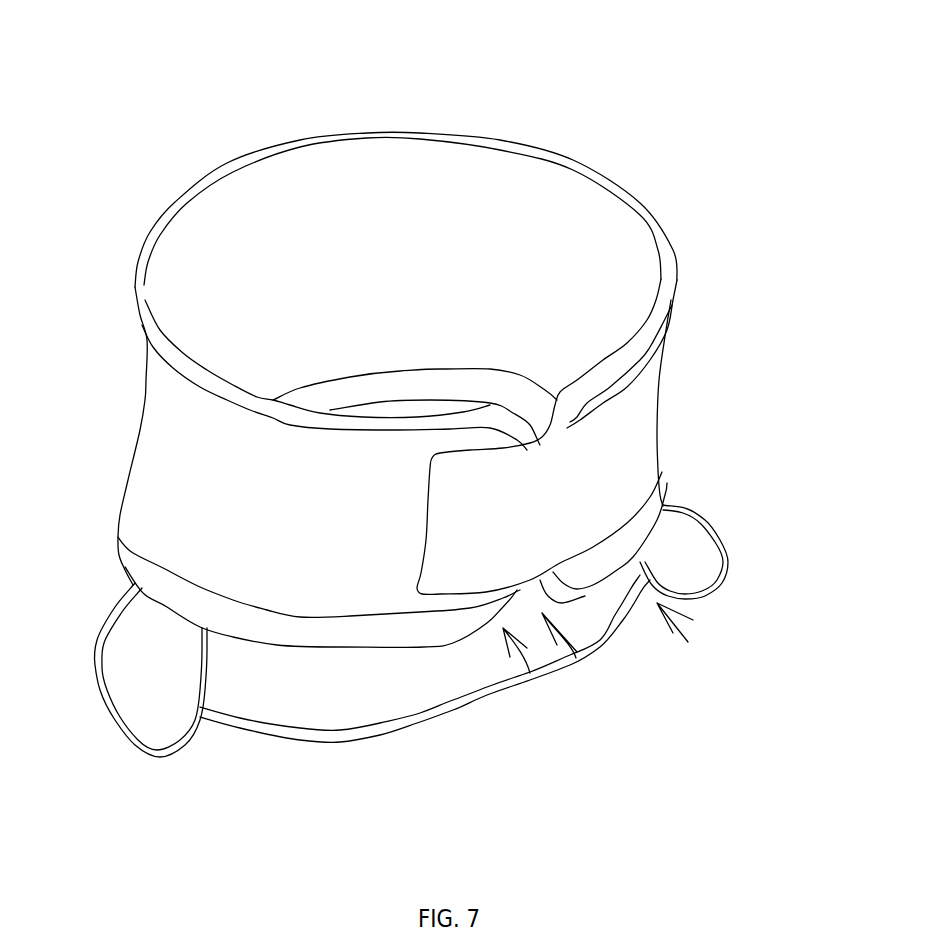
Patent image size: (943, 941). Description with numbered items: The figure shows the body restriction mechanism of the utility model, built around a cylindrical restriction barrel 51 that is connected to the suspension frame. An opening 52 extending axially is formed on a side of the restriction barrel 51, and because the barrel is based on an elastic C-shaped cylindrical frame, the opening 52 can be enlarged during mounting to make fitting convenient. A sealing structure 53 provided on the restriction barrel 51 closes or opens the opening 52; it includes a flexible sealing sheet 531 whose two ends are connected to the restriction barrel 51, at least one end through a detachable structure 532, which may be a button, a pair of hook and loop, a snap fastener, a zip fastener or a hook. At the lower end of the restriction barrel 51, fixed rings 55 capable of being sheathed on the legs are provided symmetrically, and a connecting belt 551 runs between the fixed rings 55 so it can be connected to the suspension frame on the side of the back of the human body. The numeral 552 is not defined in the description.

The restriction barrel 51 is at (445, 182).
The collar body 552 is at (218, 457).
The flexible sealing sheet 531 is at (635, 443).
The detachable structure 532 is at (688, 642).
The connecting belt 551 is at (432, 712).
The fixed rings 55 is at (190, 742).
The sealing structure 53 is at (530, 673).
The opening 52 is at (576, 658).